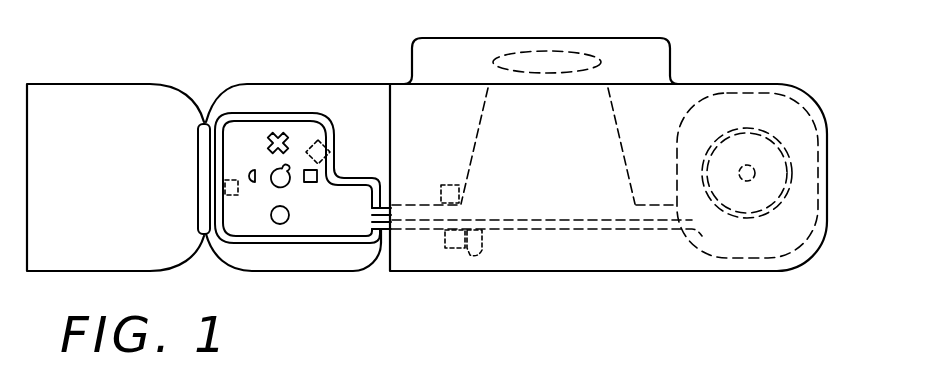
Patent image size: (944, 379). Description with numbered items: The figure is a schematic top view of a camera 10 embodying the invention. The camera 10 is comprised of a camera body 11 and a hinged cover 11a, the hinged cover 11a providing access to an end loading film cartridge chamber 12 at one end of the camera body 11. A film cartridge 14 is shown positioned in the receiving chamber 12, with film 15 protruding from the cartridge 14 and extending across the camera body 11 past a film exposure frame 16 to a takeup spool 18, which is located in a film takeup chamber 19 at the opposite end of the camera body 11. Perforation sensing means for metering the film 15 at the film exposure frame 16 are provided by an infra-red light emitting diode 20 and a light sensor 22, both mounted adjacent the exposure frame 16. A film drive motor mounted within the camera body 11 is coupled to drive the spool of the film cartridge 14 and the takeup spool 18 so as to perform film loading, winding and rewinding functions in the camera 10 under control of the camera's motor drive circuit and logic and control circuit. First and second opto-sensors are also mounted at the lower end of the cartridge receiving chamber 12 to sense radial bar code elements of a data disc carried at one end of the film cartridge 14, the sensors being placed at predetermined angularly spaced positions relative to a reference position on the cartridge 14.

The camera 10 is at (714, 68).
The camera body 11 is at (770, 83).
The hinged cover 11a is at (62, 84).
The film cartridge chamber 12 is at (289, 113).
The film cartridge 14 is at (242, 133).
The film 15 is at (360, 271).
The film exposure frame 16 is at (575, 180).
The takeup spool 18 is at (770, 185).
The film takeup chamber 19 is at (795, 126).
The infra-red light emitting diode 20 is at (481, 250).
The light sensor 22 is at (448, 184).